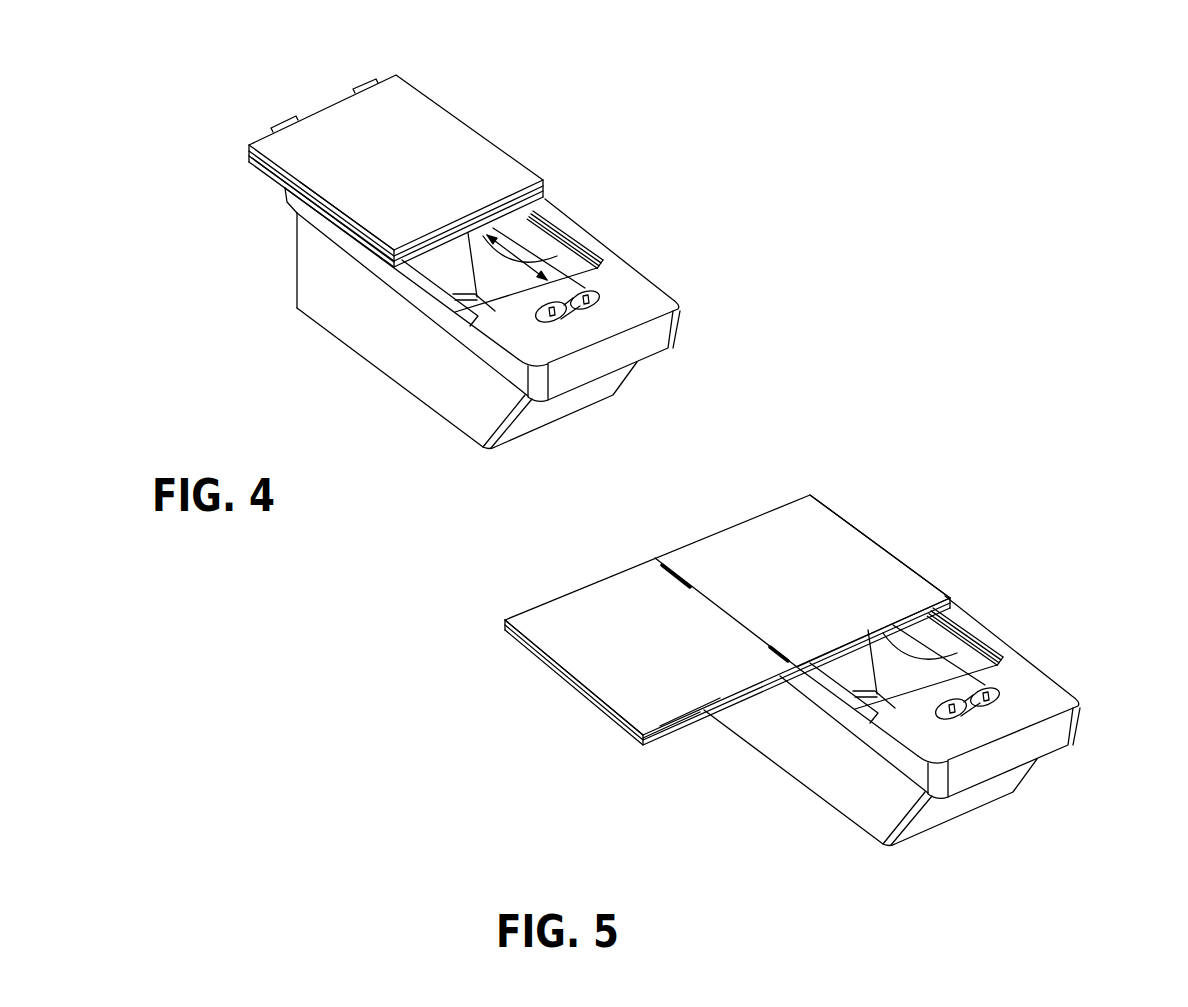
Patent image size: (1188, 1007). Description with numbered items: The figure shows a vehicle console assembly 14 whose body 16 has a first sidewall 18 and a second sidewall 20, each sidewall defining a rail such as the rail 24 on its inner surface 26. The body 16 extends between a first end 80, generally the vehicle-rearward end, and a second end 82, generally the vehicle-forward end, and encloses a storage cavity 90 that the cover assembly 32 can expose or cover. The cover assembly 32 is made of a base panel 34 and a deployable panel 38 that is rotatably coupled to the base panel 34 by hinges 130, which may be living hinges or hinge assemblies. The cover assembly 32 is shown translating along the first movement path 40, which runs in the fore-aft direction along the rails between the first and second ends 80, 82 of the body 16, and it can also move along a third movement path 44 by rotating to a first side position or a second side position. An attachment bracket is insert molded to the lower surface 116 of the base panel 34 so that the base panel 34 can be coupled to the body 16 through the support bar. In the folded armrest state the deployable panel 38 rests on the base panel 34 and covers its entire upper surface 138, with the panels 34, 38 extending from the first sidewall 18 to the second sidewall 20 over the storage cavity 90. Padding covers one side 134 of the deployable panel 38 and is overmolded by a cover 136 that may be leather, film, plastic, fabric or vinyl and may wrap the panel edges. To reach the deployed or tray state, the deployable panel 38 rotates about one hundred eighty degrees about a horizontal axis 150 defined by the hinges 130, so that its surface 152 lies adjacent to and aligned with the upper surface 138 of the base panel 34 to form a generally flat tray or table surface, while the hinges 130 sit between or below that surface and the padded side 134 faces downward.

In FIG. 4, the console assembly 14 is at (170, 189).
In FIG. 5, the console assembly 14 is at (833, 480).
In FIG. 4, the body 16 is at (456, 407).
In FIG. 5, the body 16 is at (876, 824).
In FIG. 4, the first sidewall 18 is at (378, 343).
In FIG. 5, the first sidewall 18 is at (813, 763).
In FIG. 4, the second sidewall 20 is at (600, 240).
In FIG. 5, the second sidewall 20 is at (997, 645).
In FIG. 4, the rail 24 is at (565, 228).
In FIG. 5, the rail 24 is at (962, 628).
In FIG. 4, the inner surface 26 is at (602, 258).
In FIG. 4, the cover assembly 32 is at (460, 108).
In FIG. 5, the cover assembly 32 is at (877, 532).
In FIG. 4, the base panel 34 is at (362, 250).
In FIG. 5, the base panel 34 is at (833, 528).
In FIG. 4, the deployable panel 38 is at (337, 221).
In FIG. 5, the deployable panel 38 is at (547, 633).
In FIG. 4, the first movement path 40 is at (517, 257).
In FIG. 4, the third movement path 44 is at (305, 82).
In FIG. 5, the third movement path 44 is at (692, 512).
In FIG. 4, the first end 80 is at (665, 330).
In FIG. 5, the first end 80 is at (1066, 728).
In FIG. 4, the second end 82 is at (293, 207).
In FIG. 4, the storage cavity 90 is at (458, 300).
In FIG. 5, the storage cavity 90 is at (874, 699).
In FIG. 5, the lower surface 116 is at (1000, 657).
In FIG. 4, the hinges 130 is at (366, 86).
In FIG. 5, the hinges 130 is at (670, 572).
In FIG. 5, the side 134 is at (667, 738).
In FIG. 4, the cover 136 is at (305, 172).
In FIG. 5, the cover 136 is at (685, 722).
In FIG. 5, the upper surface 138 is at (908, 588).
In FIG. 5, the horizontal axis 150 is at (652, 562).
In FIG. 5, the surface 152 is at (617, 672).